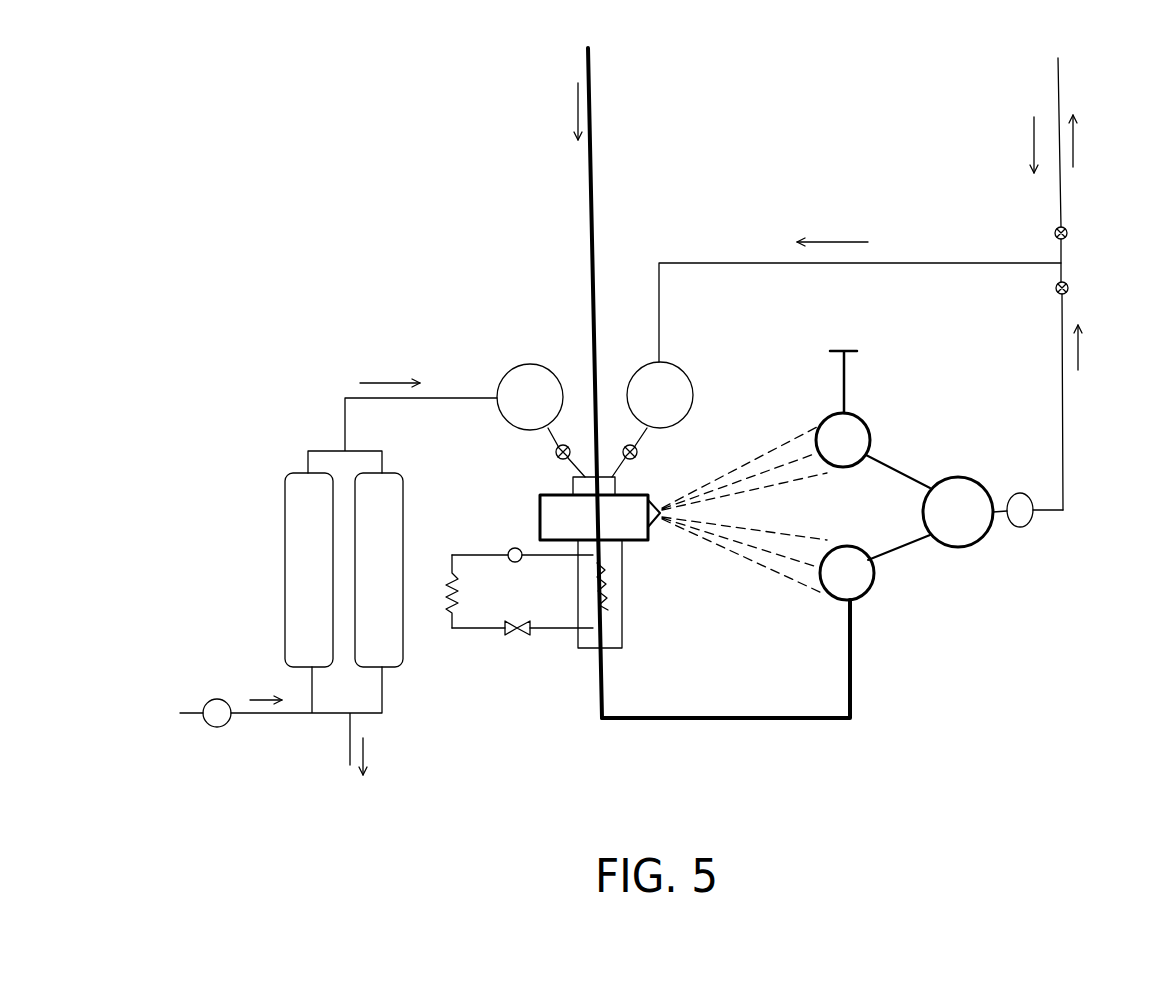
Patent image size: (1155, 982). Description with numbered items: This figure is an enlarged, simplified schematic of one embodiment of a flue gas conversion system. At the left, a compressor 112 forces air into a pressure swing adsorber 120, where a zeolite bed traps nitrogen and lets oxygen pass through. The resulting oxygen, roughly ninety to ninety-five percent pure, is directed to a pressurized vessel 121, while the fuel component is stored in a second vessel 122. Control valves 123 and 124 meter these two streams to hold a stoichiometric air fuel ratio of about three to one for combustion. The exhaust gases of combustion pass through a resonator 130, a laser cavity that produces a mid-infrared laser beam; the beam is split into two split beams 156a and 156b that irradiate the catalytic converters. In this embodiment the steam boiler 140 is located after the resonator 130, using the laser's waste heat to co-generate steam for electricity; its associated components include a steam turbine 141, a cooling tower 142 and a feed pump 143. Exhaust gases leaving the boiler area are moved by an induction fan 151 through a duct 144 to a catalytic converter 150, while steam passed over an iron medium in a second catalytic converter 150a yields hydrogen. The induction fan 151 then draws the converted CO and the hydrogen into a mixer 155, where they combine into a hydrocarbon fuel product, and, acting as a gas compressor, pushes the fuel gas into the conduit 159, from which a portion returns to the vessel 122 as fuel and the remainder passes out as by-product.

The compressor 112 is at (208, 702).
The pressure swing adsorber 120 is at (285, 477).
The vessel 121 is at (513, 364).
The vessel 122 is at (691, 387).
The control valve 123 is at (556, 453).
The control valve 124 is at (639, 455).
The resonator 130 is at (542, 497).
The steam boiler 140 is at (578, 642).
The steam turbine 141 is at (508, 637).
The cooling tower 142 is at (455, 612).
The feed pump 143 is at (518, 563).
The duct 144 is at (603, 720).
The catalytic converter 150 is at (867, 603).
The catalytic converter 150a is at (868, 418).
The induction fan 151 is at (1021, 530).
The mixer 155 is at (975, 524).
The split beam 156a is at (743, 565).
The split beam 156b is at (770, 447).
The conduit 159 is at (1063, 433).